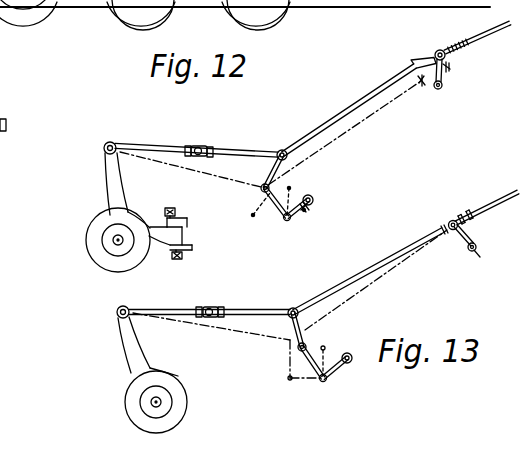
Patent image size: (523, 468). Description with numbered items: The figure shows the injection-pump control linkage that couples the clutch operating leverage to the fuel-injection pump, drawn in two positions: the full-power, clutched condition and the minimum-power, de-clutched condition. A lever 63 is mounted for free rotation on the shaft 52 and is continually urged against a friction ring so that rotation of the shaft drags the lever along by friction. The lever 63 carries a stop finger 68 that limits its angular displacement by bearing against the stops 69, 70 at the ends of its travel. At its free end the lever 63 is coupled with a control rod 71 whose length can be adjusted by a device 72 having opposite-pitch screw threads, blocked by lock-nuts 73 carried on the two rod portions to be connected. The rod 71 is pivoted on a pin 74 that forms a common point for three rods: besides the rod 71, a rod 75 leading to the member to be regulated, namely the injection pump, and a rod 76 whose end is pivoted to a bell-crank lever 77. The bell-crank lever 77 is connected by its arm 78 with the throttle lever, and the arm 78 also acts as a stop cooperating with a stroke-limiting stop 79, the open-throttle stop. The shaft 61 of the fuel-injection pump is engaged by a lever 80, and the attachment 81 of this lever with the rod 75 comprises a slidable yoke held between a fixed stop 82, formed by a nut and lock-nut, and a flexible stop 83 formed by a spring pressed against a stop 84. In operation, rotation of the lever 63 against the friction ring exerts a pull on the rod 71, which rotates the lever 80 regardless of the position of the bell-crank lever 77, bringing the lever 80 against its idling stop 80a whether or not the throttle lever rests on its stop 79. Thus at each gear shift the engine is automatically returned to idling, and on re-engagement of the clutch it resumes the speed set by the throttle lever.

In FIG. 12, the shaft 52 is at (115, 238).
In FIG. 12, the shaft 61 is at (443, 85).
In FIG. 13, the shaft 61 is at (471, 251).
In FIG. 12, the lever 63 is at (110, 168).
In FIG. 12, the stop finger 68 is at (160, 240).
In FIG. 12, the stop 69 is at (172, 208).
In FIG. 12, the stop 70 is at (183, 255).
In FIG. 12, the control rod 71 is at (155, 146).
In FIG. 12, the device 72 is at (202, 147).
In FIG. 12, the lock-nuts 73 is at (188, 146).
In FIG. 12, the pin 74 is at (283, 150).
In FIG. 12, the rod 75 is at (328, 123).
In FIG. 12, the rod 76 is at (276, 173).
In FIG. 12, the bell-crank lever 77 is at (277, 200).
In FIG. 12, the arm 78 is at (302, 222).
In FIG. 12, the stroke-limiting stop 79 is at (312, 208).
In FIG. 12, the lever 80 is at (450, 65).
In FIG. 12, the idling stop 80a is at (421, 88).
In FIG. 12, the attachment 81 is at (434, 53).
In FIG. 13, the fixed stop 82 is at (448, 225).
In FIG. 13, the flexible stop 83 is at (458, 214).
In FIG. 13, the stop 84 is at (470, 210).